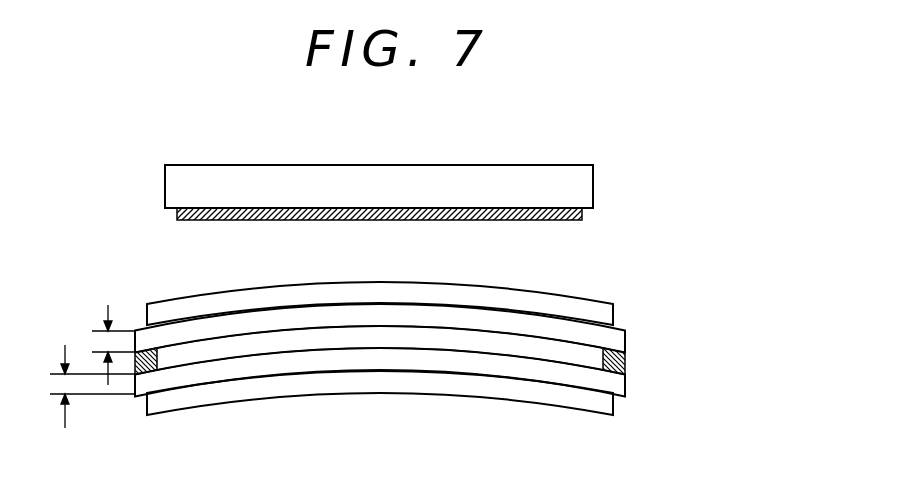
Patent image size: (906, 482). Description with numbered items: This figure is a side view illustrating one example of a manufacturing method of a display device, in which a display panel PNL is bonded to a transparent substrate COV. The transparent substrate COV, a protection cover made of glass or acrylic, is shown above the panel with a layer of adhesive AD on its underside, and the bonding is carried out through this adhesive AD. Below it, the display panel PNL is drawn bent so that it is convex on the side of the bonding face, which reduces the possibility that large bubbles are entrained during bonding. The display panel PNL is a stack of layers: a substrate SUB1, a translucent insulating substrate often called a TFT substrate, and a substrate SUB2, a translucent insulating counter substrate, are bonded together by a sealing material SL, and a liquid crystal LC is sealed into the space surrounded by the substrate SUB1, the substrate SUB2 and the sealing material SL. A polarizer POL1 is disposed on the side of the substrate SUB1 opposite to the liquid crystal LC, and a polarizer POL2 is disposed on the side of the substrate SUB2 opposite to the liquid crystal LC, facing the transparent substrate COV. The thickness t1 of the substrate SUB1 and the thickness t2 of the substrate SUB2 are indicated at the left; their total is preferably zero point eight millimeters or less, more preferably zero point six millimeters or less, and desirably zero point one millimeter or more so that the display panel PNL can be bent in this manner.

The transparent substrate COV is at (447, 175).
The adhesive AD is at (192, 222).
The polarizer POL2 is at (608, 313).
The substrate SUB2 is at (617, 338).
The sealing material SL is at (623, 362).
The liquid crystal LC is at (575, 363).
The substrate SUB1 is at (575, 385).
The polarizer POL1 is at (572, 408).
The display panel PNL is at (733, 307).
The thickness of the substrate SUB1 t1 is at (78, 386).
The thickness of the substrate SUB2 t2 is at (101, 345).